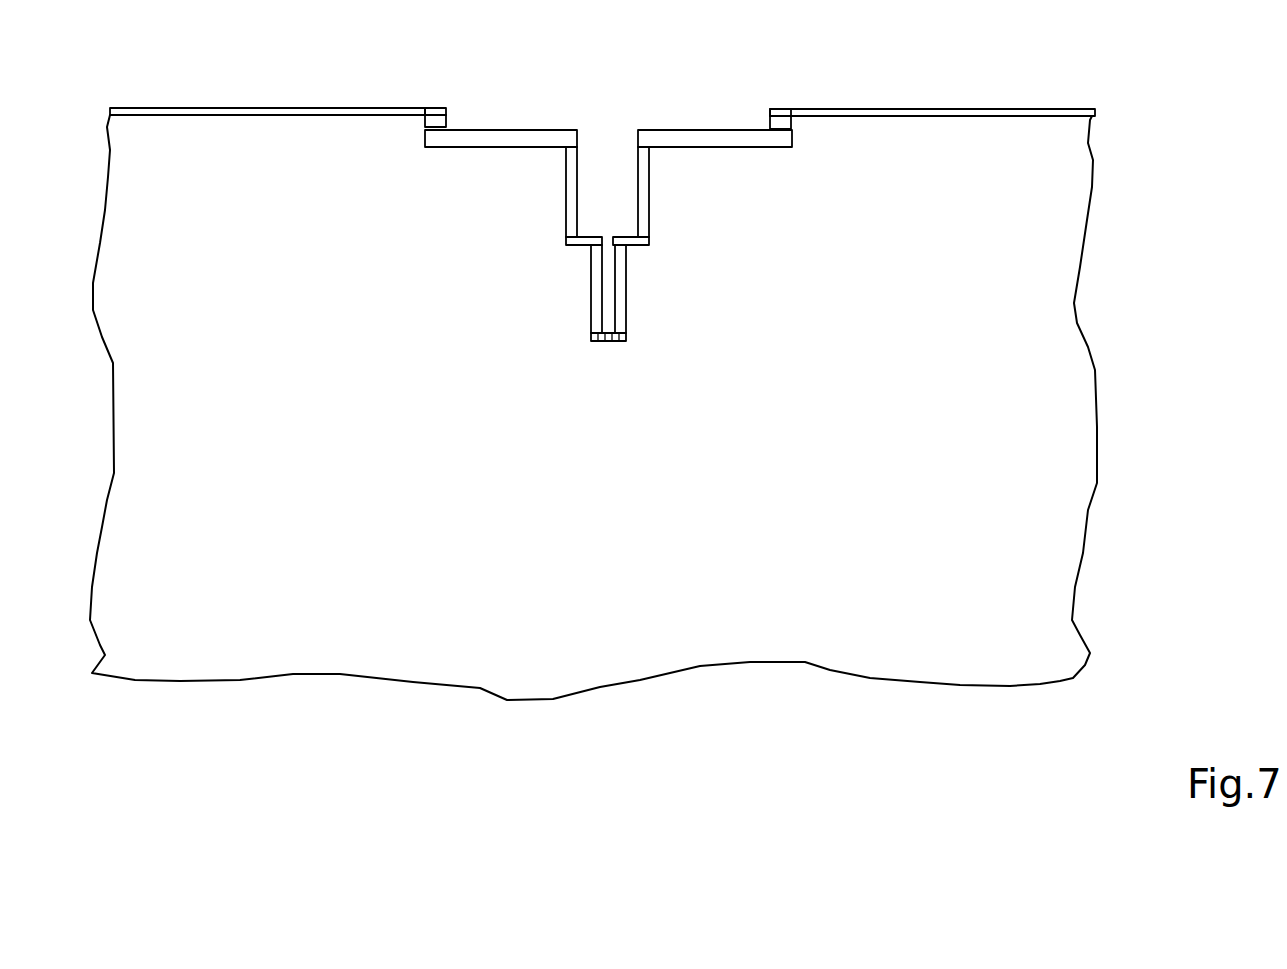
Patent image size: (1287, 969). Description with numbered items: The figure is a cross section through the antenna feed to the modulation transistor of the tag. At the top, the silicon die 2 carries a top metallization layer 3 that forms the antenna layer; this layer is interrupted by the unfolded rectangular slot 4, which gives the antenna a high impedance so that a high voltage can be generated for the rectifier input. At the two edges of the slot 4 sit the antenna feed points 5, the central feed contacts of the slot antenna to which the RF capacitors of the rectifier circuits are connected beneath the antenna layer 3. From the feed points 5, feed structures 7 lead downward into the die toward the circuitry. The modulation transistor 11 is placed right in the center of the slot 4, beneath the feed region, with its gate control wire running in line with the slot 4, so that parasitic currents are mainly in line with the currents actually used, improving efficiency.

The silicon die 2 is at (1043, 392).
The top metallization layer 3 is at (266, 112).
The slot 4 is at (445, 77).
The antenna feed points 5 is at (438, 122).
The leg 7 is at (573, 215).
The modulation transistor 11 is at (610, 340).